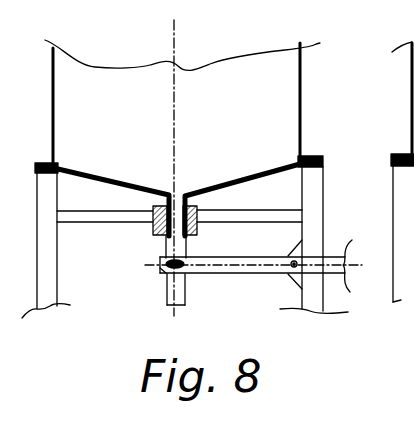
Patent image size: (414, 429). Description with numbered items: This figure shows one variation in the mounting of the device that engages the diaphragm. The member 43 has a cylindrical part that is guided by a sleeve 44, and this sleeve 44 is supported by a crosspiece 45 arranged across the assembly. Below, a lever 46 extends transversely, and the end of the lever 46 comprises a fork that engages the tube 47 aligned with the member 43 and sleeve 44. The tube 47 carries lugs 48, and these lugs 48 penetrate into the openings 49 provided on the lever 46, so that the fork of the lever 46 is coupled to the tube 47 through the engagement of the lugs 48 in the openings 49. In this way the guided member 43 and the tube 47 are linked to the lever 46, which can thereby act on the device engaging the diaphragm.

The member 43 is at (242, 185).
The sleeve 44 is at (163, 227).
The crosspiece 45 is at (259, 213).
The lever 46 is at (245, 267).
The tube 47 is at (166, 297).
The lugs 48 is at (181, 262).
The openings 49 is at (157, 273).